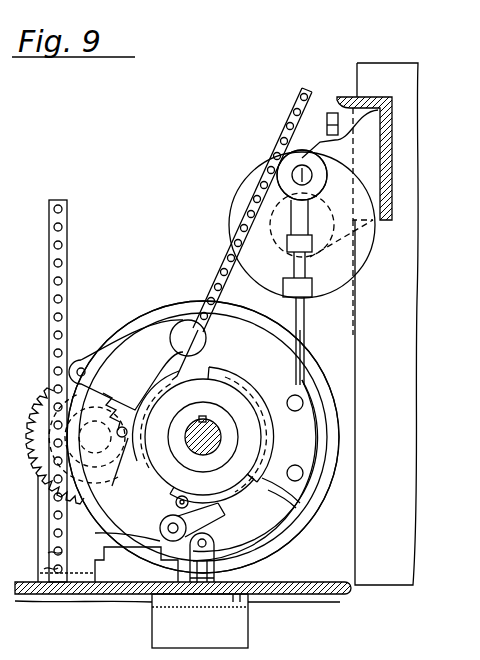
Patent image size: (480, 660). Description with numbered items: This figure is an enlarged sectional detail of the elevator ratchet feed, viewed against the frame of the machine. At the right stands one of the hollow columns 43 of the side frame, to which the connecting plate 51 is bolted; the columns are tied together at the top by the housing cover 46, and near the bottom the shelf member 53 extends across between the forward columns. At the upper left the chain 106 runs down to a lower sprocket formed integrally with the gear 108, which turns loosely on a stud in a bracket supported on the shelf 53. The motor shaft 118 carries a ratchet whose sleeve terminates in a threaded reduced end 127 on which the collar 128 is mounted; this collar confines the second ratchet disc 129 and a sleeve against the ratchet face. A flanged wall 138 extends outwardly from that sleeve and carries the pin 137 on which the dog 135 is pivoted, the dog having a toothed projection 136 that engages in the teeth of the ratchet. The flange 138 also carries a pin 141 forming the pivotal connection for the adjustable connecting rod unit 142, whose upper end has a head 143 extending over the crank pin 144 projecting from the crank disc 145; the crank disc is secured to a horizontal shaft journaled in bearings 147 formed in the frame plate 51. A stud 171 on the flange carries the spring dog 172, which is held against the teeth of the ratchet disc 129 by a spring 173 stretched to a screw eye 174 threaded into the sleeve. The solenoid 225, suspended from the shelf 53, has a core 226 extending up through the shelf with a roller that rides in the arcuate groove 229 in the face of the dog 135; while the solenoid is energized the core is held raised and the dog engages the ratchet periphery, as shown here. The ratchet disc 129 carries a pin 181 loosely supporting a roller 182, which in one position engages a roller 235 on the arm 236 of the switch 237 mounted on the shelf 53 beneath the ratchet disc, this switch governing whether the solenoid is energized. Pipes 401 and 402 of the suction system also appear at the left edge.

The hollow column 43 is at (391, 72).
The connecting plate 51 is at (392, 150).
The bearing 147 is at (322, 146).
The crank pin 144 is at (300, 174).
The crank disc 145 is at (244, 183).
The head 143 is at (280, 186).
The adjustable connecting rod unit 142 is at (306, 272).
The chain 106 is at (68, 280).
The housing cover 46 is at (0, 198).
The pipe 401 is at (0, 256).
The pipe 402 is at (0, 346).
The flanged wall 138 is at (255, 318).
The core 226 is at (250, 568).
The arcuate groove 229 is at (303, 513).
The dog 135 is at (292, 510).
The motor shaft 118 is at (212, 428).
The threaded reduced end 127 is at (203, 437).
The collar 128 is at (252, 430).
The ratchet disc 129 is at (272, 448).
The toothed projection 136 is at (222, 500).
The pin 141 is at (303, 403).
The pin 137 is at (303, 473).
The stud 171 is at (207, 340).
The spring dog 172 is at (126, 365).
The spring 173 is at (108, 400).
The gear 108 is at (36, 430).
The screw eye 174 is at (118, 468).
The roller 182 is at (184, 496).
The pin 181 is at (176, 503).
The roller 235 is at (161, 526).
The arm 236 is at (125, 533).
The switch 237 is at (154, 557).
The shelf member 53 is at (316, 595).
The solenoid 225 is at (200, 621).